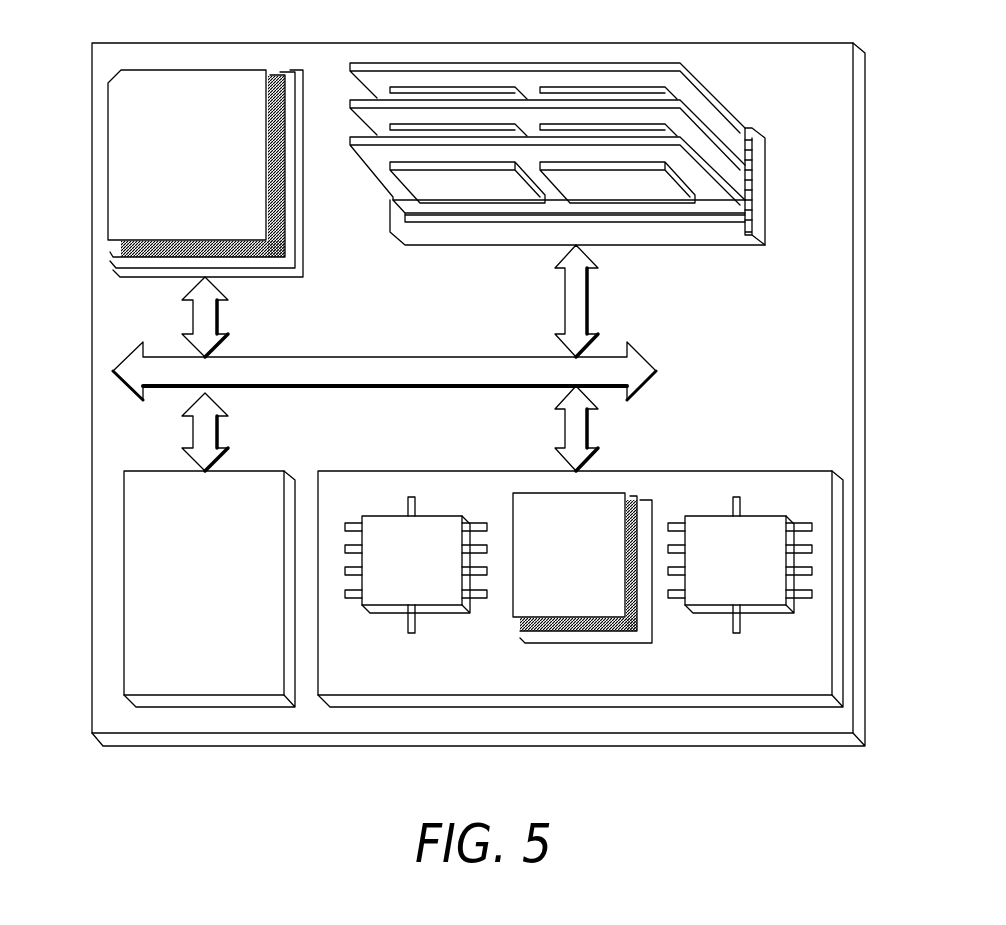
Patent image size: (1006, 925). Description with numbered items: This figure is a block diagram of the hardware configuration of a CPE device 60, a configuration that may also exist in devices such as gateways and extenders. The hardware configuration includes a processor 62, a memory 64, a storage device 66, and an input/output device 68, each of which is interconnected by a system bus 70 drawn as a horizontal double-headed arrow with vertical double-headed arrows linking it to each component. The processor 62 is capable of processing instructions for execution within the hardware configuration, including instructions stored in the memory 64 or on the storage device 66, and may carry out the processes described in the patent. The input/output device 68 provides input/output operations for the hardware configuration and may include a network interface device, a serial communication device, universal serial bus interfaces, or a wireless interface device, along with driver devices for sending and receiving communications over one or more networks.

The CPE device 60 is at (922, 86).
The processor 62 is at (186, 69).
The memory 64 is at (712, 104).
The storage device 66 is at (252, 471).
The input/output device 68 is at (780, 471).
The system bus 70 is at (385, 357).